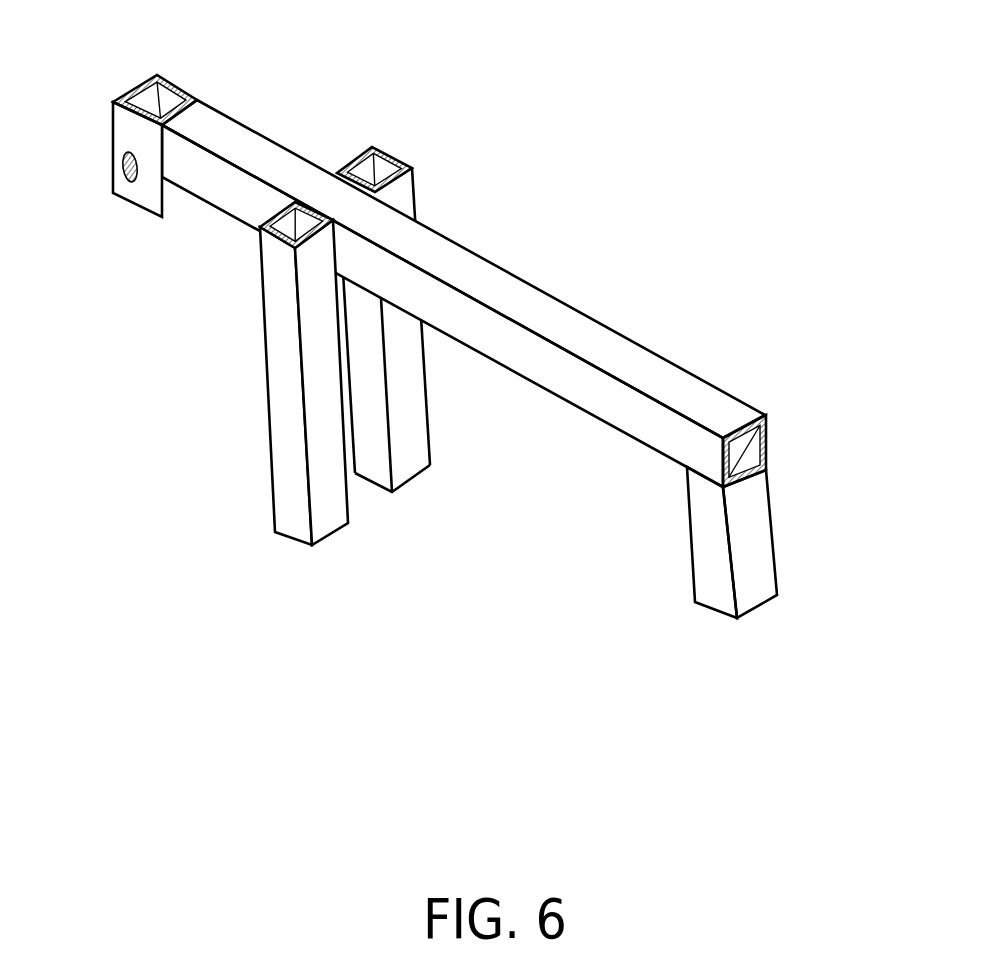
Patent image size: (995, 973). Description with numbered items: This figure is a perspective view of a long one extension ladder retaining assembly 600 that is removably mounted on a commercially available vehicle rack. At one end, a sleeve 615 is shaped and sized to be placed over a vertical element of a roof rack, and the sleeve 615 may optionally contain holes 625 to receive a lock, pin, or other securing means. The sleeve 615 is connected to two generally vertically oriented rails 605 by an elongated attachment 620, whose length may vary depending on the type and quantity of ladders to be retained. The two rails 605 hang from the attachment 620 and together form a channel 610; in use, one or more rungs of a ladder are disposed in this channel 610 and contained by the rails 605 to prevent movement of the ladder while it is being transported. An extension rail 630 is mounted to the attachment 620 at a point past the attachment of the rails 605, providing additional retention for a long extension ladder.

The long one extension ladder retaining assembly 600 is at (463, 312).
The rail 605 is at (346, 365).
The channel 610 is at (367, 495).
The sleeve 615 is at (117, 175).
The attachment 620 is at (250, 153).
The holes 625 is at (132, 180).
The extension rail 630 is at (750, 557).